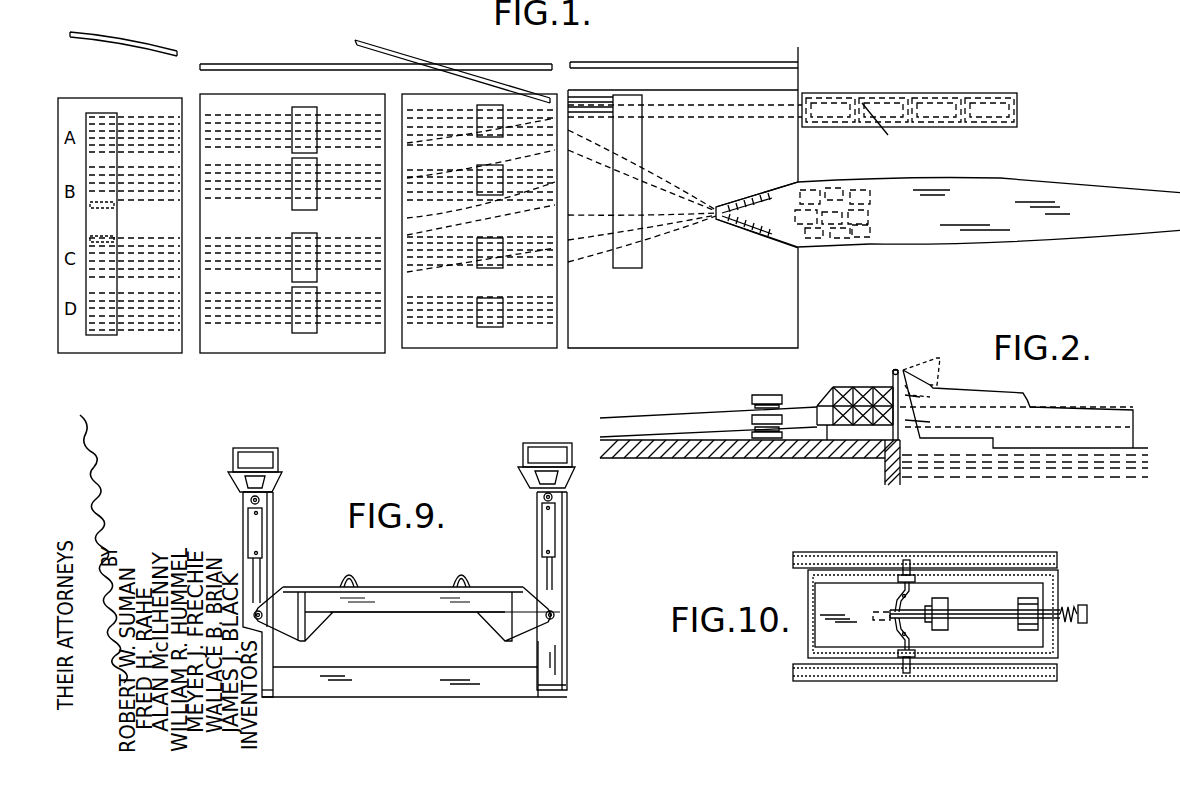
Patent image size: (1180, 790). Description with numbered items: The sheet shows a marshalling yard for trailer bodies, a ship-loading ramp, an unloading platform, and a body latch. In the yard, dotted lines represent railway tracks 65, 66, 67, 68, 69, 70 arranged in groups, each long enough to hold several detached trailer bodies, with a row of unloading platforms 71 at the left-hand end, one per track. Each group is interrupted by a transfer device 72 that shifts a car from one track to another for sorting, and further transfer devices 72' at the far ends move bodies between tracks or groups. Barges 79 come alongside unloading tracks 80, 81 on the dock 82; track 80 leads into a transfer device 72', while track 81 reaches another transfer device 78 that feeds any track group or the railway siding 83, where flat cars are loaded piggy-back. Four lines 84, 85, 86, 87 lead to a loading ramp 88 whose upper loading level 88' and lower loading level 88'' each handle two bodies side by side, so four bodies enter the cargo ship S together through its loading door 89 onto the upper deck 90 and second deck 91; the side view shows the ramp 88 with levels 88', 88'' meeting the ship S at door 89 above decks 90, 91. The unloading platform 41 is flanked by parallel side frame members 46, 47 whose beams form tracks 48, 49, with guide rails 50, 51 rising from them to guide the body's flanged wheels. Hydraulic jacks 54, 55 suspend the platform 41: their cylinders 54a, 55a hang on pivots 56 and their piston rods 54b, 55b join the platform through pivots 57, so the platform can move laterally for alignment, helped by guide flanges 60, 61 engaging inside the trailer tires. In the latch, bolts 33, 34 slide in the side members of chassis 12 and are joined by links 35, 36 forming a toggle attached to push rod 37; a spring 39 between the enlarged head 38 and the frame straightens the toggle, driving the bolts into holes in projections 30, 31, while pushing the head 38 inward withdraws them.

In FIG. 1, the unloading platforms 71 is at (100, 113).
In FIG. 1, the railway track 65 is at (126, 117).
In FIG. 1, the railway track 66 is at (145, 124).
In FIG. 1, the railway track 67 is at (177, 130).
In FIG. 1, the railway track 68 is at (220, 130).
In FIG. 1, the railway track 69 is at (250, 140).
In FIG. 1, the railway track 70 is at (274, 148).
In FIG. 1, the transfer device 72 is at (308, 202).
In FIG. 1, the transfer devices 72' is at (511, 216).
In FIG. 1, the railway siding 83 is at (603, 77).
In FIG. 1, the unloading track 81 is at (765, 105).
In FIG. 1, the unloading track 80 is at (755, 117).
In FIG. 1, the barges 79 is at (914, 93).
In FIG. 1, the transfer device 78 is at (642, 156).
In FIG. 1, the line 84 is at (590, 185).
In FIG. 1, the line 85 is at (592, 190).
In FIG. 1, the line 86 is at (667, 223).
In FIG. 1, the line 87 is at (697, 222).
In FIG. 1, the loading ramp 88 is at (733, 201).
In FIG. 2, the loading ramp 88 is at (855, 380).
In FIG. 1, the dock 82 is at (768, 176).
In FIG. 1, the cargo ship S is at (1047, 177).
In FIG. 2, the cargo ship S is at (1073, 403).
In FIG. 2, the upper loading level 88' is at (791, 402).
In FIG. 2, the lower loading level 88'' is at (855, 432).
In FIG. 2, the loading door 89 is at (933, 412).
In FIG. 2, the upper deck 90 is at (1115, 412).
In FIG. 2, the second deck 91 is at (1133, 428).
In FIG. 9, the guide rail 50 is at (233, 457).
In FIG. 9, the track 48 is at (278, 472).
In FIG. 9, the guide rail 51 is at (543, 443).
In FIG. 9, the track 49 is at (525, 468).
In FIG. 9, the pivots 56 is at (250, 501).
In FIG. 9, the hydraulic jack 54 is at (281, 534).
In FIG. 9, the cylinder 54a is at (248, 527).
In FIG. 9, the piston rod 54b is at (262, 571).
In FIG. 9, the hydraulic jack 55 is at (577, 527).
In FIG. 9, the cylinder 55a is at (542, 528).
In FIG. 9, the piston rod 55b is at (556, 578).
In FIG. 9, the pivots 57 is at (262, 615).
In FIG. 9, the guide flange 60 is at (356, 580).
In FIG. 9, the guide flange 61 is at (458, 580).
In FIG. 9, the platform 41 is at (410, 605).
In FIG. 9, the side frame member 46 is at (273, 655).
In FIG. 9, the side frame member 47 is at (567, 653).
In FIG. 10, the bolt 33 is at (906, 560).
In FIG. 10, the downwardly extending projection 30 is at (993, 552).
In FIG. 10, the chassis 12 is at (1058, 580).
In FIG. 10, the link 35 is at (886, 599).
In FIG. 10, the link 36 is at (885, 637).
In FIG. 10, the push rod 37 is at (985, 612).
In FIG. 10, the spring 39 is at (1072, 608).
In FIG. 10, the enlarged head 38 is at (1087, 613).
In FIG. 10, the bolt 34 is at (908, 673).
In FIG. 10, the downwardly extending projection 31 is at (990, 681).